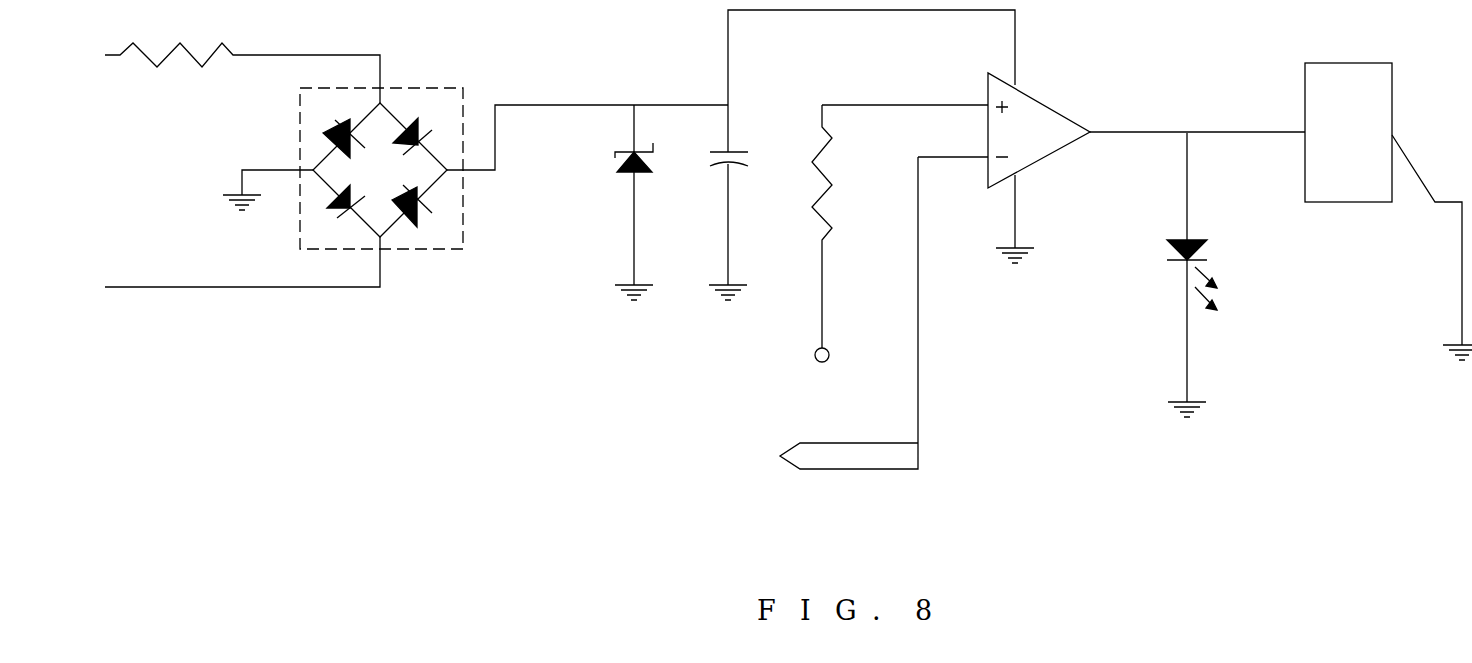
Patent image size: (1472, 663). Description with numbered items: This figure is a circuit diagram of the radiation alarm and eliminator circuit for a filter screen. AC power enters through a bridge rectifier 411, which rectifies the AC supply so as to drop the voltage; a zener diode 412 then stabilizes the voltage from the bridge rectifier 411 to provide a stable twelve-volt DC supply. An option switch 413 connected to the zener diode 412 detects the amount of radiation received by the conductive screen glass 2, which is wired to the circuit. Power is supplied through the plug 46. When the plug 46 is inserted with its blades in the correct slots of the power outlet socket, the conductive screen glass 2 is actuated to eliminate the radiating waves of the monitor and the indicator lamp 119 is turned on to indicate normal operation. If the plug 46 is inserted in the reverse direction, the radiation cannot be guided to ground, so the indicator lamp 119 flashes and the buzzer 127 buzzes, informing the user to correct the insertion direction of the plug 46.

The bridge rectifier 411 is at (428, 252).
The zener diode 412 is at (615, 177).
The option switch 413 is at (1045, 160).
The plug 46 is at (840, 357).
The indicator lamp 119 is at (1167, 275).
The buzzer 127 is at (1340, 203).
The conductive screen glass 2 is at (857, 472).